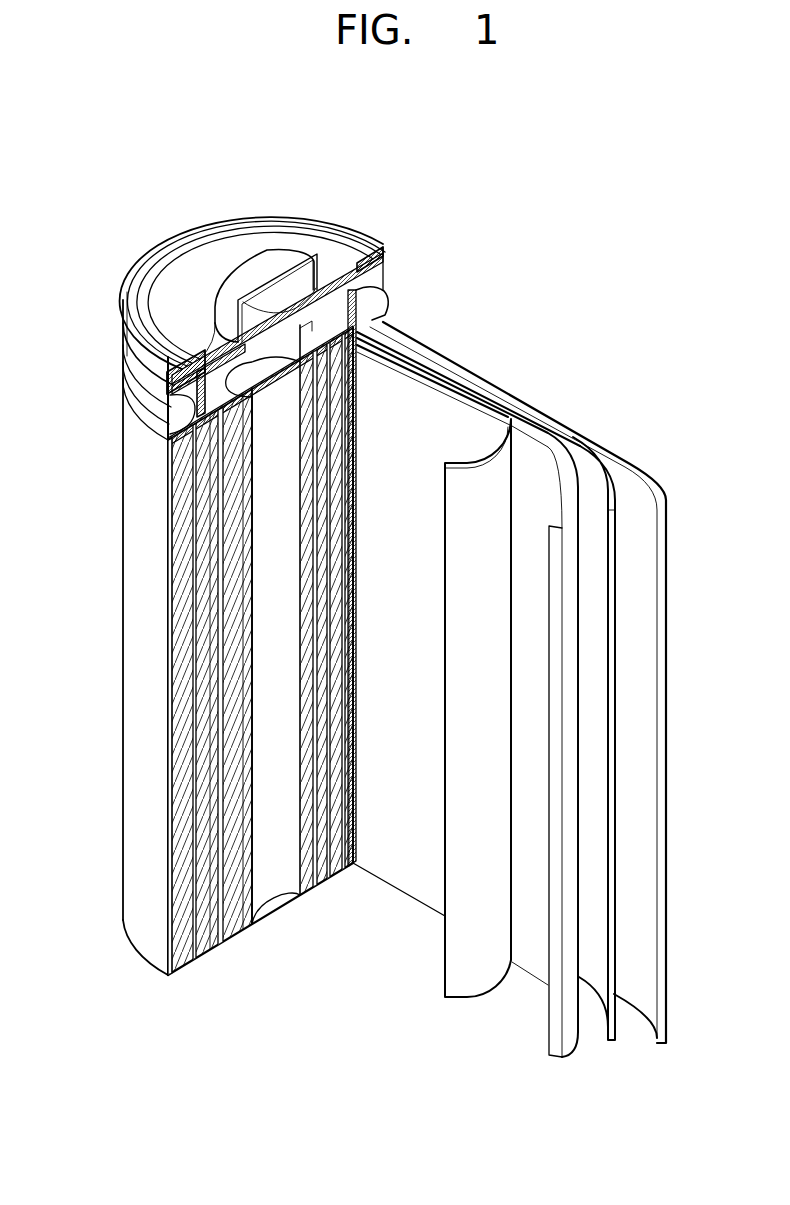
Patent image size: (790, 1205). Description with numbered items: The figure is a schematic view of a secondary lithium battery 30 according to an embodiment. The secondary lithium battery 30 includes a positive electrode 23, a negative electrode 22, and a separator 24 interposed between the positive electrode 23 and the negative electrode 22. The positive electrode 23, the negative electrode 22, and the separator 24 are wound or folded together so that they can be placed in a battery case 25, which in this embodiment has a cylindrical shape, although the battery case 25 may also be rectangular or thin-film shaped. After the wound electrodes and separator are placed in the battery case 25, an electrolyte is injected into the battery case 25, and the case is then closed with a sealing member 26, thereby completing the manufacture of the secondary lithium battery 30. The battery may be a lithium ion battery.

The secondary lithium battery 30 is at (312, 174).
The negative electrode 22 is at (643, 478).
The positive electrode 23 is at (565, 475).
The separator 24 is at (607, 485).
The battery case 25 is at (140, 648).
The sealing member 26 is at (245, 268).